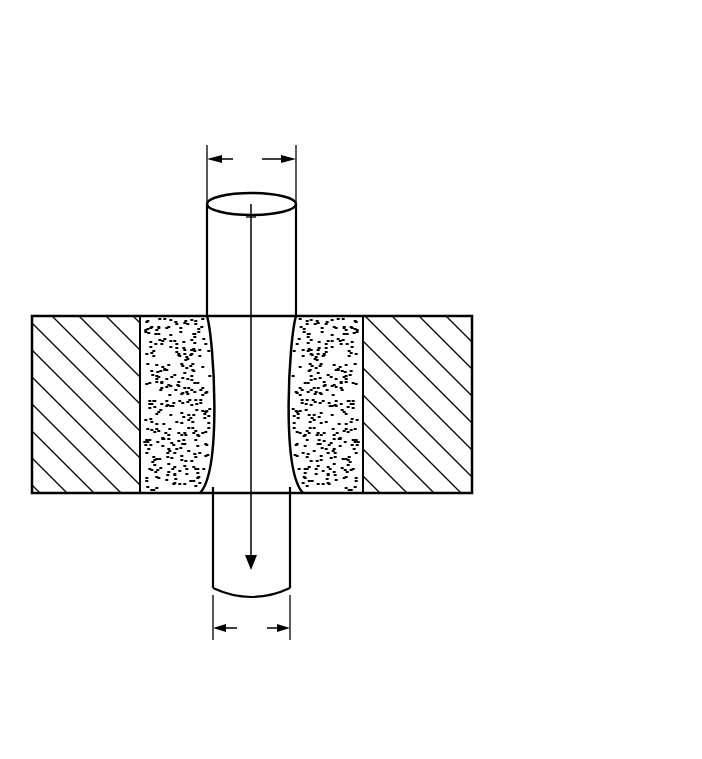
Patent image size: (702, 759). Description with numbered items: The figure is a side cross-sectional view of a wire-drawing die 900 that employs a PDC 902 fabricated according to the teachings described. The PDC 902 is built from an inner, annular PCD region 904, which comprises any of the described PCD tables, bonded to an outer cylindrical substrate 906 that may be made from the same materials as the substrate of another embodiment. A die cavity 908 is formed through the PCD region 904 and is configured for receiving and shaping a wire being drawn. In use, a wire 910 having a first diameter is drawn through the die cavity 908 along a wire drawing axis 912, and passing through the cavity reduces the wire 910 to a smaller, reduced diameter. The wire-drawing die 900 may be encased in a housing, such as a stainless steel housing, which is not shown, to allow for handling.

The wire-drawing die 900 is at (439, 153).
The PDC 902 is at (490, 365).
The inner annular PCD region 904 is at (173, 338).
The outer cylindrical substrate 906 is at (68, 337).
The die cavity 908 is at (292, 487).
The wire 910 is at (235, 437).
The wire drawing axis 912 is at (252, 527).